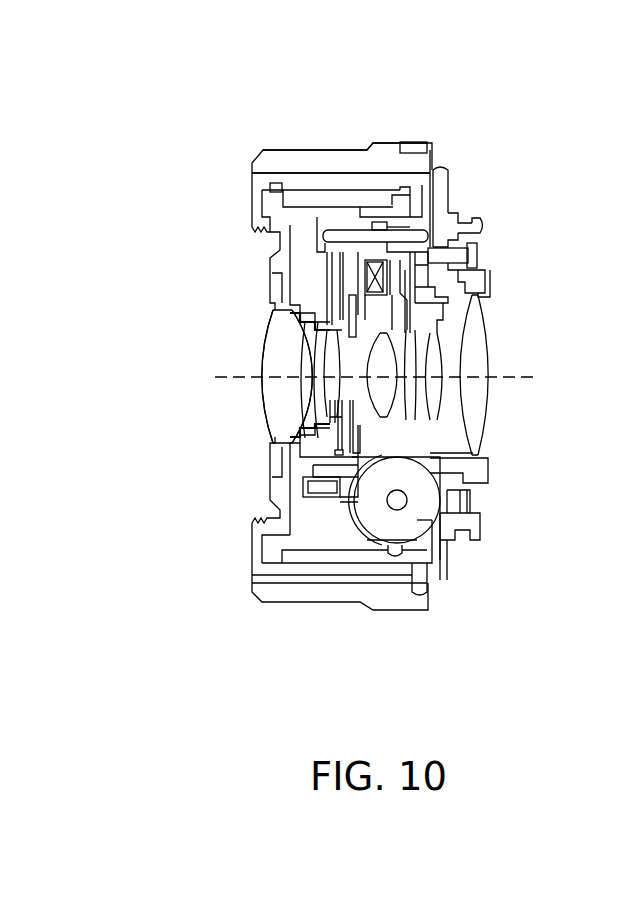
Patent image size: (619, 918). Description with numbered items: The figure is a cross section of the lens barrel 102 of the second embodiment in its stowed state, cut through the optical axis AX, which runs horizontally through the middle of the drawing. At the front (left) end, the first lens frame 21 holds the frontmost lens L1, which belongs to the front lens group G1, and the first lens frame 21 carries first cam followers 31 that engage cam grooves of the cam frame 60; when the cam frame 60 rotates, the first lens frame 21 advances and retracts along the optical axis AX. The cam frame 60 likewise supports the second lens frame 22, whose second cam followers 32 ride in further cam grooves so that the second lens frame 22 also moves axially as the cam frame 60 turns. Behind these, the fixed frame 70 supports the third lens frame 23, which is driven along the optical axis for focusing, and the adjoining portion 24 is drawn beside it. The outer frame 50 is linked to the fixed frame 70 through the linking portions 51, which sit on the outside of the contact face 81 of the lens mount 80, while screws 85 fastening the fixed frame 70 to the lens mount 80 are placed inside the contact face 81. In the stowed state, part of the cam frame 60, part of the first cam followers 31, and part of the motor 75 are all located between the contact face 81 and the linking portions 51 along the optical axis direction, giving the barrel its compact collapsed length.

The lens barrel 102 is at (143, 120).
The first lens frame 21 is at (250, 212).
The second lens frame 22 is at (360, 520).
The third lens frame 23 is at (462, 487).
The lens frame projection 24 is at (432, 455).
The first cam followers 31 is at (450, 198).
The second cam followers 32 is at (397, 205).
The outer frame 50 is at (322, 158).
The linking portions 51 is at (405, 157).
The cam frame 60 is at (307, 200).
The fixed frame 70 is at (455, 480).
The motor 75 is at (412, 522).
The lens mount 80 is at (462, 217).
The contact face 81 is at (453, 227).
The screws 85 is at (455, 255).
The optical axis AX is at (228, 378).
The first lens group G1 is at (278, 392).
The lens L1 is at (273, 423).